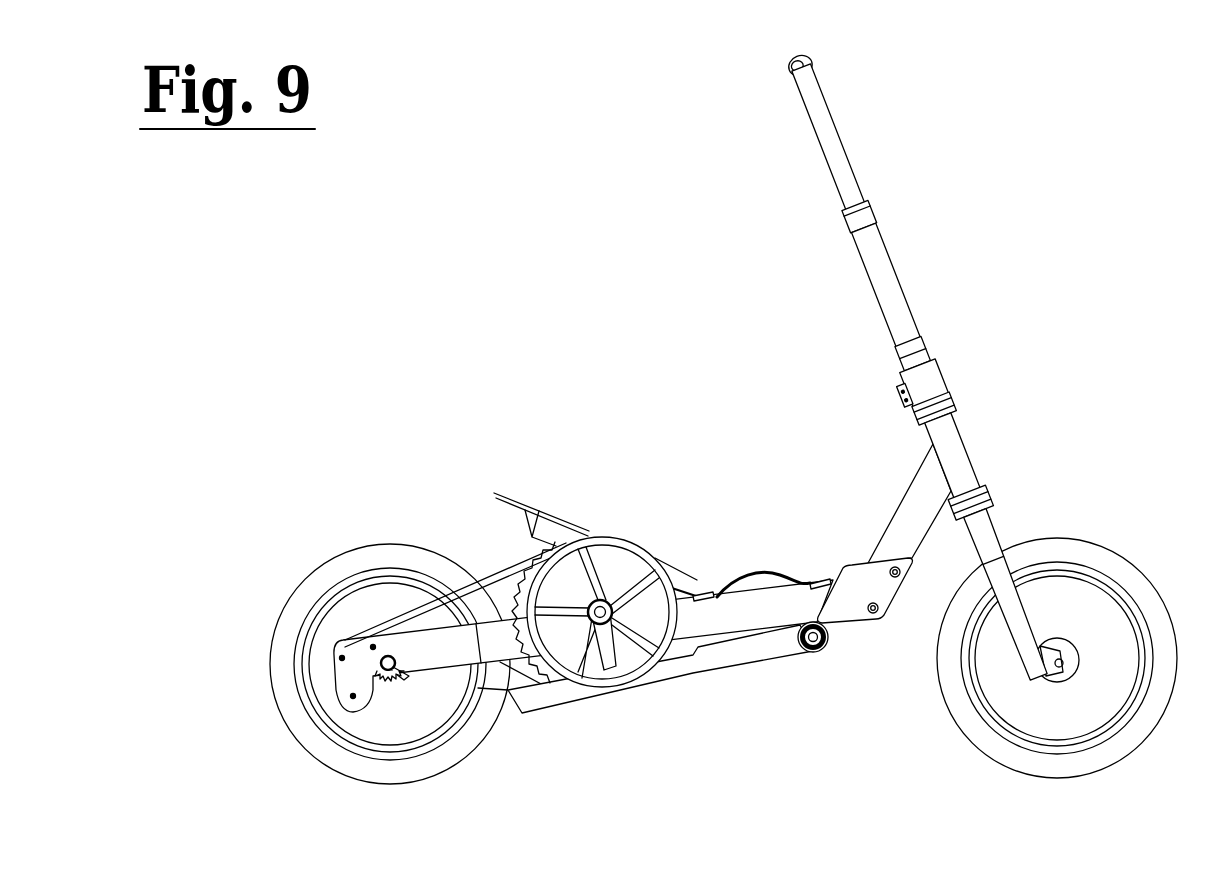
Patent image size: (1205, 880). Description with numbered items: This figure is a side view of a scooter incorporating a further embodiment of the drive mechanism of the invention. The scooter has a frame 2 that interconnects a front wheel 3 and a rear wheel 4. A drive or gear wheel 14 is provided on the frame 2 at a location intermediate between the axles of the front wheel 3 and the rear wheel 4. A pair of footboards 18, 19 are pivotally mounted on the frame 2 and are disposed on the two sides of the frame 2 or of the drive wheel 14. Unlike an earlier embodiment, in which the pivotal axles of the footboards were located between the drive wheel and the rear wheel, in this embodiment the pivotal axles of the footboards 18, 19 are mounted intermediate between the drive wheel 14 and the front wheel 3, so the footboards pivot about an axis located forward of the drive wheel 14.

The frame 2 is at (853, 613).
The front wheel 3 is at (1100, 553).
The rear wheel 4 is at (352, 556).
The drive wheel 14 is at (628, 540).
The footboard 18 is at (636, 678).
The footboard 19 is at (533, 511).